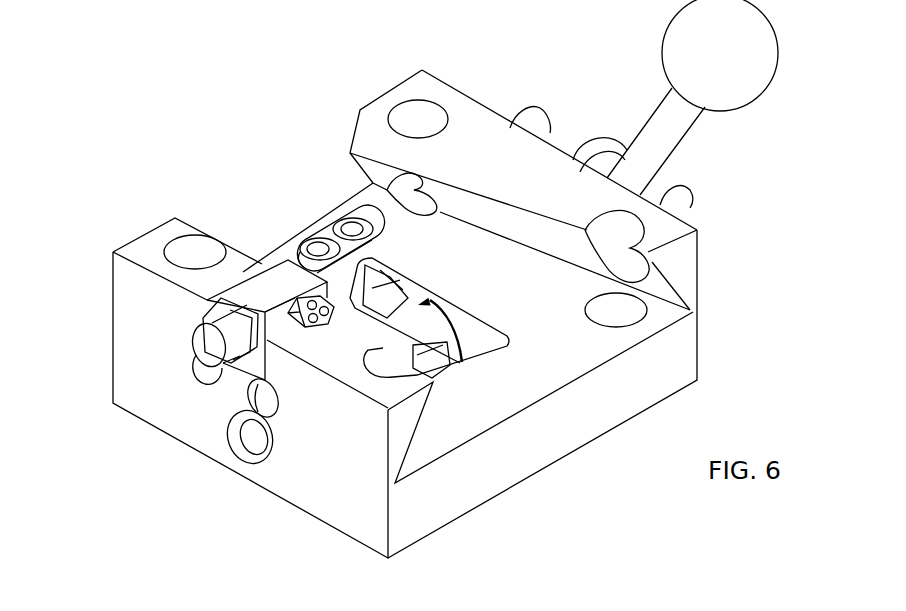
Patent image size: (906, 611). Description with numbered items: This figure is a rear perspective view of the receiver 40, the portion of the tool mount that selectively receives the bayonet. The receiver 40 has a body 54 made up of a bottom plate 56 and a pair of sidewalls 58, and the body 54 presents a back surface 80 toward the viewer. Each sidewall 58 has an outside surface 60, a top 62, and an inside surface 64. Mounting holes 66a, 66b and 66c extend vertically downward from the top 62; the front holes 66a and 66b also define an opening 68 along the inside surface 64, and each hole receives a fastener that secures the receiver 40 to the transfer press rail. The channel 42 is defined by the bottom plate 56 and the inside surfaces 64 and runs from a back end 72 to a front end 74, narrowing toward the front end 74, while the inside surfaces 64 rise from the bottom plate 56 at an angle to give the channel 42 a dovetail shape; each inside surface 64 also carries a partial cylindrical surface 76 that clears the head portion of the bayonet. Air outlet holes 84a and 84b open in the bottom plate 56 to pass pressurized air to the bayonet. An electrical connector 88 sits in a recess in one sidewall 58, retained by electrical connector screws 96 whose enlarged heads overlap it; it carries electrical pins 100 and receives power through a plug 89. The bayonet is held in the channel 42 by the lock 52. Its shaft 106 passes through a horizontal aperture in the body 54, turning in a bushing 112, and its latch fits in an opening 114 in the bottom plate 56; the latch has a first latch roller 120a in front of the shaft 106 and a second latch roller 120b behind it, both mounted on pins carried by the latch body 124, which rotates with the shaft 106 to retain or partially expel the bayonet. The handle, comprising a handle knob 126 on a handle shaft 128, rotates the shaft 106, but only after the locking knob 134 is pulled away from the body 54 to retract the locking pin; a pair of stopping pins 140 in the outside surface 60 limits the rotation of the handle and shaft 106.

The receiver 40 is at (228, 45).
The front end 74 is at (163, 145).
The lock 52 is at (587, 86).
The handle knob 126 is at (757, 52).
The handle shaft 128 is at (683, 123).
The locking knob 134 is at (603, 145).
The stopping pins 140 is at (538, 117).
The mounting hole 66a is at (430, 120).
The mounting hole 66b is at (198, 250).
The mounting hole 66c is at (630, 230).
The top 62 is at (211, 295).
The inside surface 64 is at (563, 250).
The partial cylindrical surface 76 is at (384, 153).
The opening 68 is at (400, 198).
The air outlet hole 84a is at (350, 222).
The air outlet hole 84b is at (320, 243).
The electrical connector 88 is at (272, 273).
The plug 89 is at (200, 347).
The electrical connector screws 96 is at (250, 392).
The electrical pins 100 is at (323, 332).
The shaft 106 is at (240, 438).
The bushing 112 is at (250, 437).
The outside surface 60 is at (343, 456).
The back surface 80 is at (435, 505).
The sidewalls 58 is at (420, 437).
The bottom plate 56 is at (400, 532).
The body 54 is at (700, 288).
The channel 42 is at (530, 356).
The back end 72 is at (573, 348).
The opening 114 is at (488, 333).
The first latch roller 120a is at (388, 298).
The second latch roller 120b is at (412, 436).
The latch body 124 is at (430, 297).